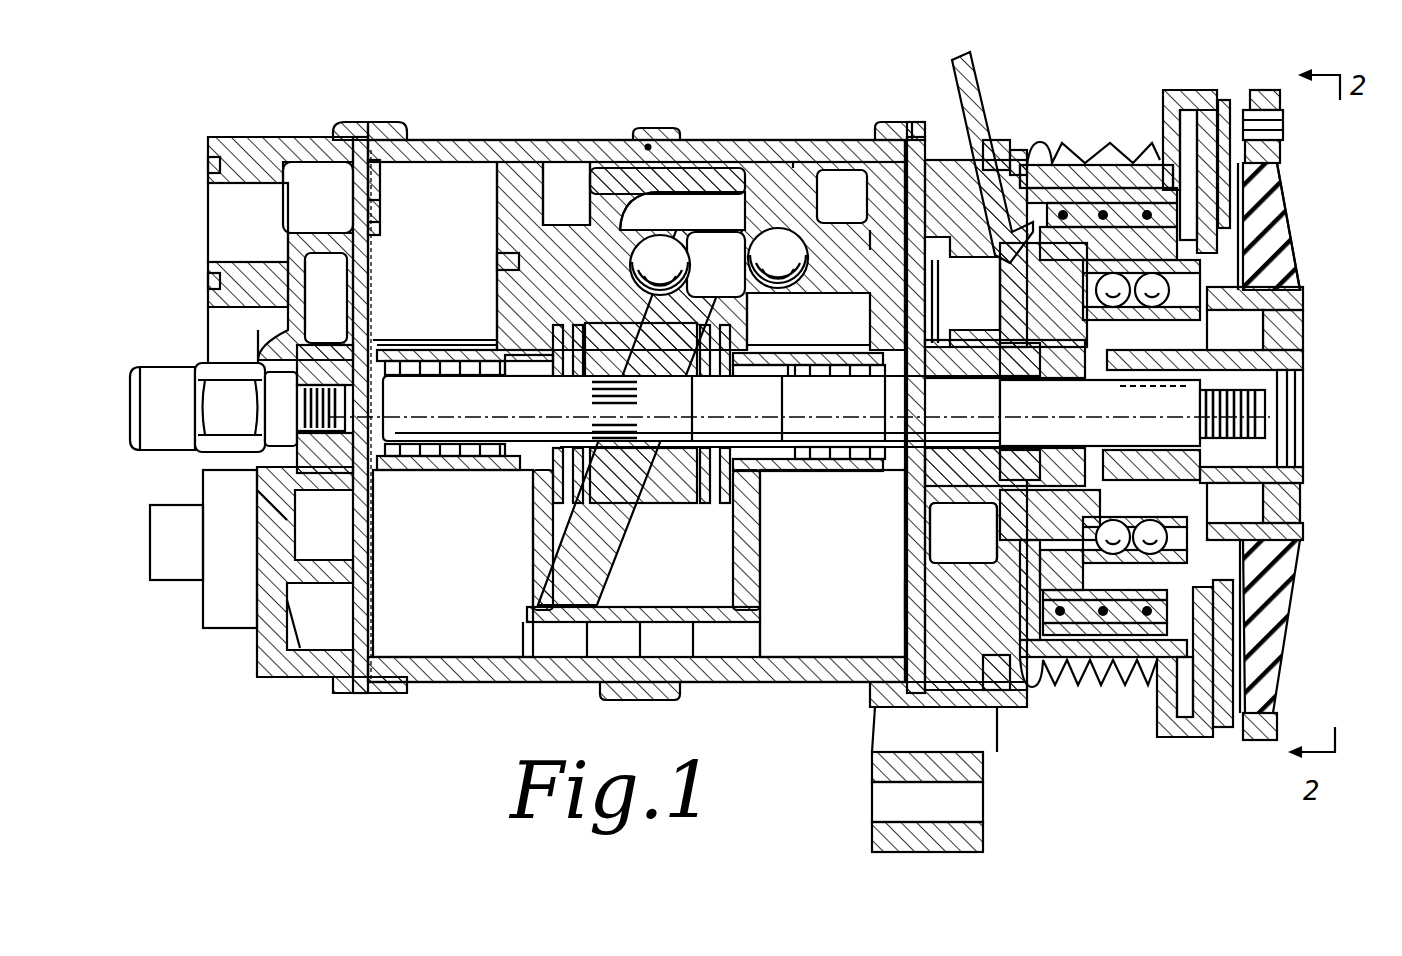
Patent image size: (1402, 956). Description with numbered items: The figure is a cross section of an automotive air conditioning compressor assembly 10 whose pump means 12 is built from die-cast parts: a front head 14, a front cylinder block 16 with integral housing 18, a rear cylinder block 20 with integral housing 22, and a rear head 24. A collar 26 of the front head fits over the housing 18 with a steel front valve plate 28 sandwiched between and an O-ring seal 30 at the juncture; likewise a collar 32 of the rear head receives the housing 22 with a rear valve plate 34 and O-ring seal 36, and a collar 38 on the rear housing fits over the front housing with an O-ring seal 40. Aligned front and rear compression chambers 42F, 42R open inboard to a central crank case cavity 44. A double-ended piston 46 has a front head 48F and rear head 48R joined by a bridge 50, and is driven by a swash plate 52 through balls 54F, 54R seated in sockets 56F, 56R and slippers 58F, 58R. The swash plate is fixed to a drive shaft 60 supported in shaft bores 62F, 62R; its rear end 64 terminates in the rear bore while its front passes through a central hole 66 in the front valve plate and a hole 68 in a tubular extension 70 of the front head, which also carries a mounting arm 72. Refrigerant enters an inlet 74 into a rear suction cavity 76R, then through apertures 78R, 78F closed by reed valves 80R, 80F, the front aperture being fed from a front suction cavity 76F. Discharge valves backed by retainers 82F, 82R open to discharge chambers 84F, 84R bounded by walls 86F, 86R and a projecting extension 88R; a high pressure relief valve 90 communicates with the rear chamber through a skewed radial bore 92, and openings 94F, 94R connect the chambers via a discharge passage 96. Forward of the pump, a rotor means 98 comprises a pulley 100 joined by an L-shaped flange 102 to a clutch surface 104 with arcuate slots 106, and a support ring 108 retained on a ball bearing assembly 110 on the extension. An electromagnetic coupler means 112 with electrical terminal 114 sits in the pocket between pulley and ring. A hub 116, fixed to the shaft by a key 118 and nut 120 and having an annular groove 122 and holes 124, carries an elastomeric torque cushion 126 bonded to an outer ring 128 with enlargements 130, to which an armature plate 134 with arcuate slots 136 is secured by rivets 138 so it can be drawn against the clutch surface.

The compressor assembly 10 is at (736, 116).
The pump means 12 is at (483, 132).
The front head 14 is at (912, 150).
The front cylinder block 16 is at (828, 158).
The front cylinder block housing 18 is at (832, 683).
The rear cylinder block 20 is at (445, 140).
The rear cylinder block housing 22 is at (490, 682).
The rear head 24 is at (297, 140).
The cylindrical collar 26 is at (895, 142).
The front valve plate 28 is at (930, 160).
The O-ring seal 30 is at (898, 136).
The cylindrical collar 32 is at (400, 126).
The rear valve plate 34 is at (352, 136).
The O-ring seal 36 is at (366, 138).
The cylindrical collar 38 is at (675, 128).
The O-ring seal 40 is at (646, 142).
The rear compression chamber 42R is at (500, 162).
The front compression chamber 42F is at (793, 162).
The crank case cavity 44 is at (742, 535).
The double-ended piston 46 is at (690, 172).
The rear head of piston 48R is at (497, 290).
The front head of piston 48F is at (868, 312).
The bridge 50 is at (612, 170).
The swash plate 52 is at (612, 540).
The rear ball 54R is at (640, 268).
The front ball 54F is at (798, 262).
The rear socket 56R is at (628, 248).
The front socket 56F is at (801, 236).
The rear slipper 58R is at (640, 376).
The front slipper 58F is at (757, 245).
The drive shaft 60 is at (865, 447).
The rear shaft bore 62R is at (488, 462).
The front shaft bore 62F is at (809, 430).
The rear end of drive shaft 64 is at (375, 447).
The central hole 66 is at (890, 455).
The hole 68 is at (915, 385).
The tubular extension 70 is at (995, 370).
The mounting arm 72 is at (985, 770).
The inlet 74 is at (208, 188).
The rear suction cavity 76R is at (380, 170).
The front suction cavity 76F is at (990, 140).
The aperture 78R is at (380, 222).
The aperture 78F is at (900, 240).
The reed valve 80R is at (380, 205).
The reed valve 80F is at (1015, 150).
The retainer 82R is at (268, 295).
The retainer 82F is at (975, 293).
The rear discharge chamber 84R is at (290, 512).
The front discharge chamber 84F is at (963, 533).
The interior cylindrical wall 86R is at (348, 575).
The annular wall 86F is at (905, 600).
The inboard projecting extension 88R is at (335, 462).
The high pressure relief valve 90 is at (165, 380).
The skewed radial bore 92 is at (435, 324).
The opening 94R is at (372, 540).
The opening 94F is at (905, 540).
The discharge refrigerant passage 96 is at (655, 685).
The rotor means 98 is at (1082, 142).
The pulley 100 is at (1110, 150).
The L-shaped flange 102 is at (1160, 725).
The clutch surface 104 is at (1285, 650).
The arcuate slots 106 is at (1270, 438).
The support ring 108 is at (1112, 650).
The ball bearing assembly 110 is at (1222, 548).
The electromagnetic coupler means 112 is at (1152, 640).
The electrical terminal 114 is at (978, 64).
The hub 116 is at (1300, 512).
The key 118 is at (1130, 380).
The nut 120 is at (1285, 382).
The annular groove 122 is at (1292, 285).
The holes 124 is at (1293, 318).
The torque cushion 126 is at (1297, 218).
The outer ring 128 is at (1268, 90).
The enlargements 130 is at (1283, 160).
The armature plate 134 is at (1227, 97).
The arcuate slots 136 is at (1283, 190).
The rivets 138 is at (1283, 122).